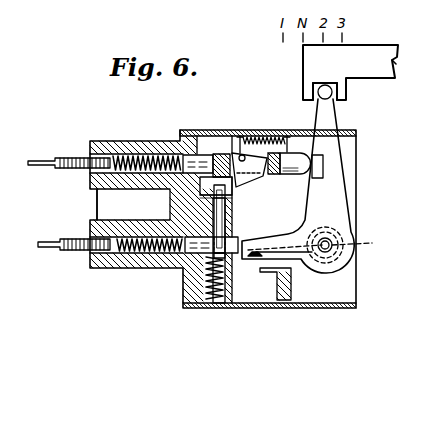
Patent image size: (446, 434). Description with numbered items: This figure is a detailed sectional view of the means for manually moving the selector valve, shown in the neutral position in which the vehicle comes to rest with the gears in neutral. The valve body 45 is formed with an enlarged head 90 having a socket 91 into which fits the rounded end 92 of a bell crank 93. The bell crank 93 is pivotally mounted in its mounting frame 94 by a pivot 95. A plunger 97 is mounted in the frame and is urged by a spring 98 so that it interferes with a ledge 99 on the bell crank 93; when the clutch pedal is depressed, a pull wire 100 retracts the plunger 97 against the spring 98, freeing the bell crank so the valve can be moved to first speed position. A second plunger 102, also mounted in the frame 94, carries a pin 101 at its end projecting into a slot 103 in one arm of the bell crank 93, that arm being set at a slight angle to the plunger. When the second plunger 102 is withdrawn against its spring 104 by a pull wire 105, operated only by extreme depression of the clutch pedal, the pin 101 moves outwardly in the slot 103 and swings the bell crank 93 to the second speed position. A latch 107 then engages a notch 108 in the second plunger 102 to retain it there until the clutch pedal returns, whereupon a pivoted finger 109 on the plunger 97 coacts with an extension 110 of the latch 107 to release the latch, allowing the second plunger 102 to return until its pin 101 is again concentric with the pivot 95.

The control member 45 is at (375, 63).
The enlarged head 90 is at (304, 68).
The socket 91 is at (312, 89).
The rounded end 92 is at (337, 95).
The bell crank 93 is at (325, 122).
The mounting frame 94 is at (352, 186).
The pivot 95 is at (356, 246).
The plunger 97 is at (298, 170).
The spring 98 is at (146, 155).
The ledge 99 is at (318, 163).
The pull wire 100 is at (37, 160).
The pin 101 is at (327, 252).
The second plunger 102 is at (238, 238).
The slot 103 is at (262, 258).
The spring 104 is at (140, 252).
The pull wire 105 is at (52, 246).
The latch 107 is at (211, 262).
The notch 108 is at (250, 258).
The pivoted finger 109 is at (245, 174).
The extension 110 is at (216, 205).